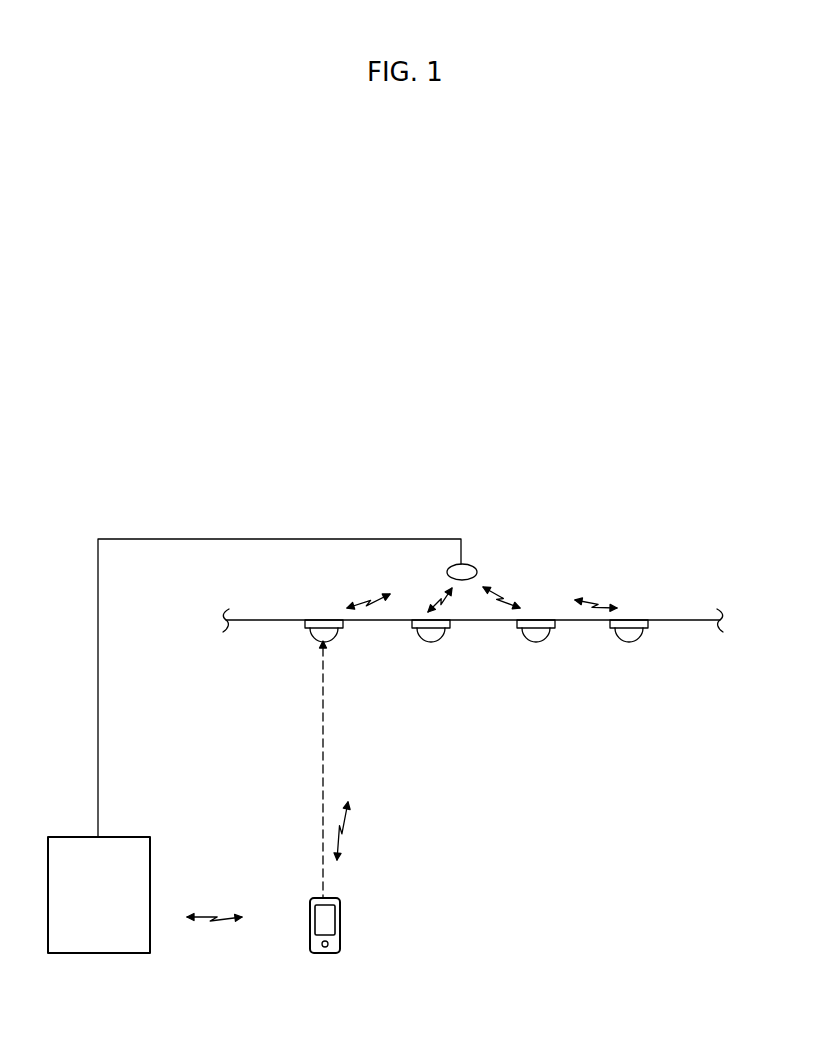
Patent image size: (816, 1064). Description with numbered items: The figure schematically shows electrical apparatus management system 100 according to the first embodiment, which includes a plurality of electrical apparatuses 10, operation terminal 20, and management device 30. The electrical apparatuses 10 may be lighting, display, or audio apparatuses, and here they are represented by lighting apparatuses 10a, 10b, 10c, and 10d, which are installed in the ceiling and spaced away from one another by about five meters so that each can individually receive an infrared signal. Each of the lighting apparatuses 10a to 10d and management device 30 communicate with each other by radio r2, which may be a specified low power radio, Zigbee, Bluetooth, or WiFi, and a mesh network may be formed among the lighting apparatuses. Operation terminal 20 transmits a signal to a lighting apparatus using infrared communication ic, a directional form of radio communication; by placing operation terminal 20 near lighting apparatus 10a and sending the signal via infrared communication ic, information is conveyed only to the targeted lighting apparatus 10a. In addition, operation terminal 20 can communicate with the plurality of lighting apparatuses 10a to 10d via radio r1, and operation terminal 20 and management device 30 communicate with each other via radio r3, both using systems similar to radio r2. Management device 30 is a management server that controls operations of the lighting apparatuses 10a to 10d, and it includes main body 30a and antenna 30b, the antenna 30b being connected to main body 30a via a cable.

The electrical apparatus management system 100 is at (77, 503).
The electrical apparatus 10 is at (630, 718).
The lighting apparatus 10a is at (335, 642).
The lighting apparatus 10b is at (444, 642).
The lighting apparatus 10c is at (551, 642).
The lighting apparatus 10d is at (644, 642).
The operation terminal 20 is at (327, 955).
The management device 30 is at (130, 953).
The main body 30a is at (70, 954).
The antenna 30b is at (471, 564).
The infrared communication ic is at (312, 769).
The radio r1 is at (353, 831).
The radio r2 is at (483, 593).
The radio r3 is at (214, 903).